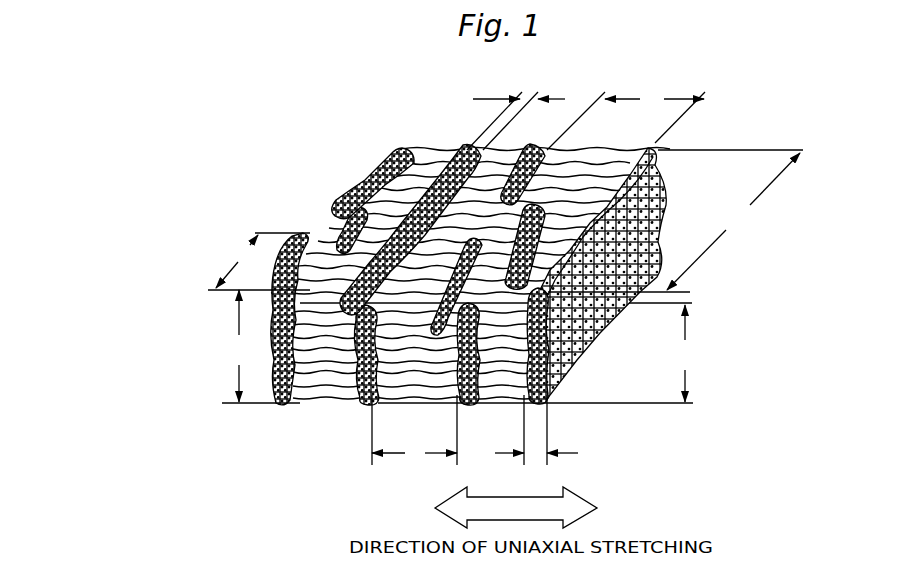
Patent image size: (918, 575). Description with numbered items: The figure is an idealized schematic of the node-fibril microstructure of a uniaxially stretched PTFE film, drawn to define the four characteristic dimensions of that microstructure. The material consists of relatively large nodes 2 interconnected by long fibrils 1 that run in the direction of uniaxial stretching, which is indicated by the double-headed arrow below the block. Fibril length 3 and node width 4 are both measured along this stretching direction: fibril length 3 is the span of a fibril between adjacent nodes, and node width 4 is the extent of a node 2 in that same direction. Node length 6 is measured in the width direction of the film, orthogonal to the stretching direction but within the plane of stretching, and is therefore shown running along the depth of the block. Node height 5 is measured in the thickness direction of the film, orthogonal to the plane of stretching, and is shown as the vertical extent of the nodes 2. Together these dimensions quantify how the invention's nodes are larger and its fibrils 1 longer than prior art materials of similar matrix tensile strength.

The fibrils 1 is at (433, 150).
The nodes 2 is at (372, 166).
The fibril length 3 is at (538, 276).
The node width 4 is at (516, 276).
The node height 5 is at (450, 346).
The node length 6 is at (509, 221).